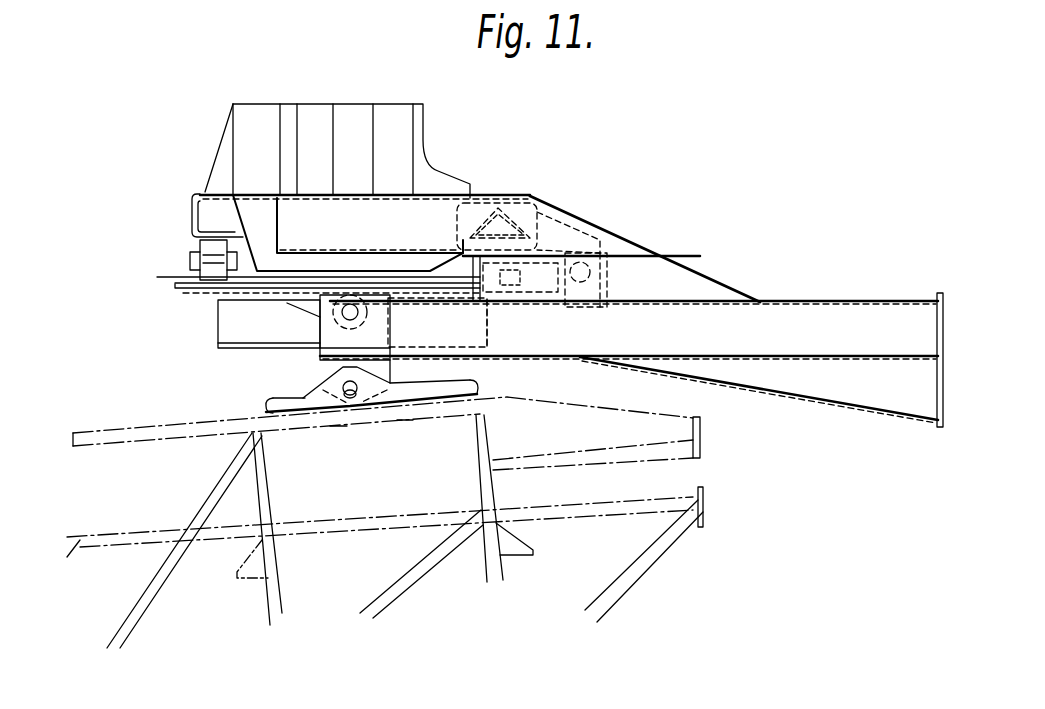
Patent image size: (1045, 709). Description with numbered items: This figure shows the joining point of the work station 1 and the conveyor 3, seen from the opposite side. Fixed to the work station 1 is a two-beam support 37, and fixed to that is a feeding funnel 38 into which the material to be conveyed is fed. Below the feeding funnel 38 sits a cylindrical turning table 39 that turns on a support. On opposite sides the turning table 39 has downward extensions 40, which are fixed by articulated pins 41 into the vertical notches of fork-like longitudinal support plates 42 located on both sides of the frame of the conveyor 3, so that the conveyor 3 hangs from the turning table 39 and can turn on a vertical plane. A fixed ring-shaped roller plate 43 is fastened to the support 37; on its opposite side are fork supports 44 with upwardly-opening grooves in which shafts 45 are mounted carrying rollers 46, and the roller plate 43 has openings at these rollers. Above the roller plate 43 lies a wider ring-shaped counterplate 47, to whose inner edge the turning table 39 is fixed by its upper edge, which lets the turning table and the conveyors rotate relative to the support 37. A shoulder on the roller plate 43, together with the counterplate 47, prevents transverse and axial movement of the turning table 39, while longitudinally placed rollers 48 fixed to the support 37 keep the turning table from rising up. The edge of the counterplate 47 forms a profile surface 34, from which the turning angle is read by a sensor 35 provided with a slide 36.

The work station 1 is at (937, 302).
The conveyor 3 is at (667, 552).
The profile surface 34 is at (527, 278).
The sensor 35 is at (597, 262).
The slide 36 is at (534, 293).
The two-beam support 37 is at (832, 323).
The feeding funnel 38 is at (222, 152).
The turning table 39 is at (233, 333).
The extensions 40 is at (320, 372).
The articulated pins 41 is at (357, 405).
The longitudinal support plates 42 is at (268, 403).
The roller plate 43 is at (175, 295).
The fork supports 44 is at (287, 303).
The shafts 45 is at (335, 316).
The rollers 46 is at (392, 330).
The counterplate 47 is at (157, 279).
The rollers 48 is at (190, 257).